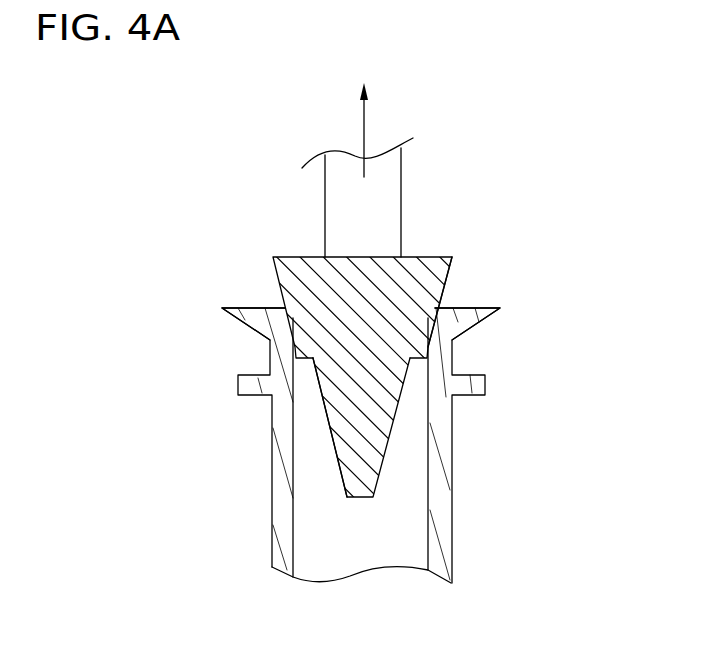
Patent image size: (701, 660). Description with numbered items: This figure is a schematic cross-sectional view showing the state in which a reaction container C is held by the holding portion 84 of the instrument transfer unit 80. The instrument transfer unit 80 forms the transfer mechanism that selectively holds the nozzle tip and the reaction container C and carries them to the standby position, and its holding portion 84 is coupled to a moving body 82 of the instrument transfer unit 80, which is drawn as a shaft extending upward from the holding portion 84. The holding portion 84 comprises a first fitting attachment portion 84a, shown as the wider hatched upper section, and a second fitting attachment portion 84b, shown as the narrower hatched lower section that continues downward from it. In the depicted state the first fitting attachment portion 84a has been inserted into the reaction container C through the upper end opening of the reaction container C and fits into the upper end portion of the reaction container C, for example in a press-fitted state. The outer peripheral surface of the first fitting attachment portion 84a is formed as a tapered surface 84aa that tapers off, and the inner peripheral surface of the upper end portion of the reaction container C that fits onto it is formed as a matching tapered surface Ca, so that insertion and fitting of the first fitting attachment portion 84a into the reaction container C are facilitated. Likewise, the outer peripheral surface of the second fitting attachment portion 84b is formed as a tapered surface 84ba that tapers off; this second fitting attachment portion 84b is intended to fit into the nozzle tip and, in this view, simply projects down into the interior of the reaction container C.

The instrument transfer unit 80 is at (342, 122).
The moving body 82 is at (363, 208).
The holding portion 84 is at (383, 356).
The first fitting attachment portion 84a is at (305, 318).
The tapered surface 84aa is at (420, 312).
The second fitting attachment portion 84b is at (367, 437).
The tapered surface 84ba is at (327, 430).
The reaction container C is at (377, 445).
The tapered surface Ca is at (452, 340).